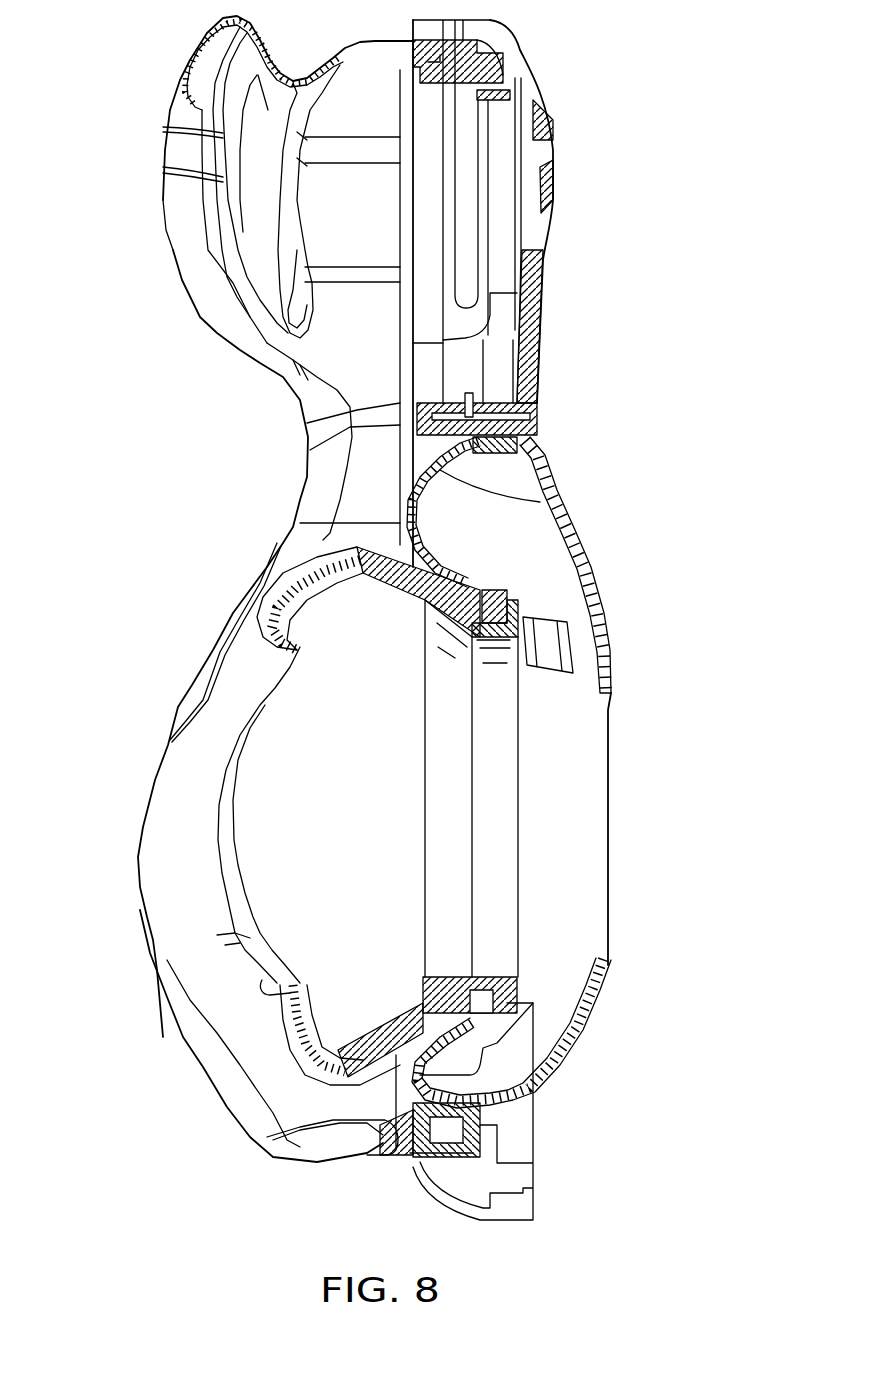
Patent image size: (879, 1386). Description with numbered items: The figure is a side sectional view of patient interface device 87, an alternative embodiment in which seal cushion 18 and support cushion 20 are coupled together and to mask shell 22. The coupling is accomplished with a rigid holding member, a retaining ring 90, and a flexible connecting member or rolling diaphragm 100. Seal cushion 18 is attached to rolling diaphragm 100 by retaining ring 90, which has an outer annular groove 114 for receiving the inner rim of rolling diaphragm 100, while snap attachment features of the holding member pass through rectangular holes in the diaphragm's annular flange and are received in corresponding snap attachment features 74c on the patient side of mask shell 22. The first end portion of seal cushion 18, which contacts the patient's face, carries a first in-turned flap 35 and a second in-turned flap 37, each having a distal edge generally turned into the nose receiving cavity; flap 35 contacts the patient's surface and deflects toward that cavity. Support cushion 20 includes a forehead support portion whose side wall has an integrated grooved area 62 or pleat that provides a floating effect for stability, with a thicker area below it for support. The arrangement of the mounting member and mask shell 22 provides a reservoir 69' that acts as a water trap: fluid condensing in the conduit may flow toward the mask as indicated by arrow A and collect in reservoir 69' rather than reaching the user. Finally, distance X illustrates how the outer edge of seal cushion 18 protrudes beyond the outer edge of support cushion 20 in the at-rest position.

The grooved area 62 is at (268, 110).
The snap attachment features 74c is at (510, 82).
The patient interface device 87 is at (681, 80).
The rolling diaphragm 100 is at (500, 490).
The outer annular groove 114 is at (520, 614).
The support cushion 20 is at (227, 630).
The mask shell 22 is at (610, 777).
The seal cushion 18 is at (150, 863).
The second in-turned flap 37 is at (252, 940).
The first in-turned flap 35 is at (270, 997).
The retaining ring 90 is at (483, 985).
The reservoir 69' is at (525, 1033).
The distance X is at (197, 1027).
The arrow A is at (578, 990).